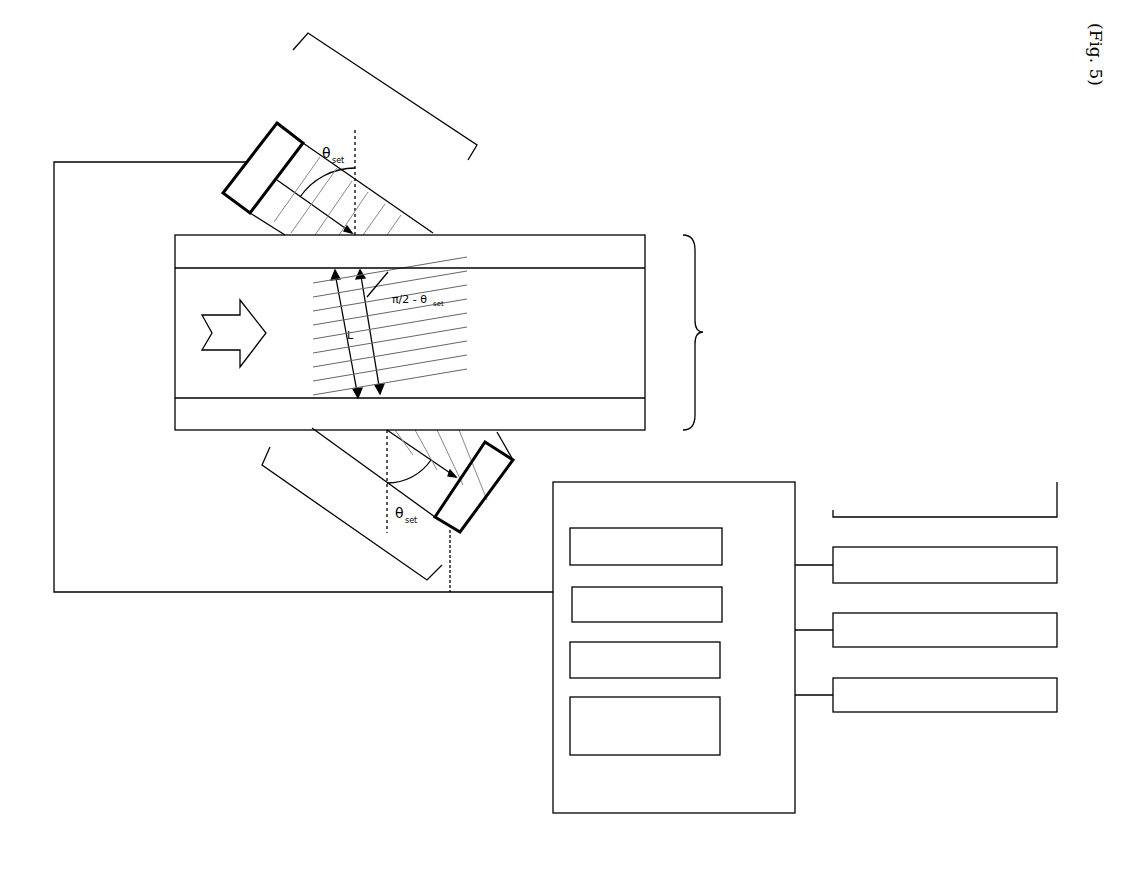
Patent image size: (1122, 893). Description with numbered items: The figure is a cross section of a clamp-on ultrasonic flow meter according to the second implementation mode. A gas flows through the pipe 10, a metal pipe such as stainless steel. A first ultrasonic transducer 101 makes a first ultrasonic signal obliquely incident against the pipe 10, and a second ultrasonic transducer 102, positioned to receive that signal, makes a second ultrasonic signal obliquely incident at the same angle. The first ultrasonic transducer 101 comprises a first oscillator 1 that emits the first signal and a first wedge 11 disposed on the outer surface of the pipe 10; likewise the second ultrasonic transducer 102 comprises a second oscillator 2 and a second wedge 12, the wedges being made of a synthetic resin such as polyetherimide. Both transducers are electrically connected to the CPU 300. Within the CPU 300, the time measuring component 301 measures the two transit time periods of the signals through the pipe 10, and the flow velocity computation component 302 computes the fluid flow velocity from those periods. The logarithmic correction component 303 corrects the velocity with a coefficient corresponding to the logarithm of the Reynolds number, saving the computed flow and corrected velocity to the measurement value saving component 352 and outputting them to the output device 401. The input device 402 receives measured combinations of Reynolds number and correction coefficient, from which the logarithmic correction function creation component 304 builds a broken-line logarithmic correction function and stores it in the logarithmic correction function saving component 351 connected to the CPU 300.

The first oscillator 1 is at (283, 118).
The second oscillator 2 is at (437, 527).
The pipe 10 is at (457, 332).
The first wedge 11 is at (417, 220).
The second wedge 12 is at (342, 458).
The first ultrasonic transducer 101 is at (393, 88).
The second ultrasonic transducer 102 is at (345, 522).
The central processing unit (CPU) 300 is at (747, 482).
The time measuring component 301 is at (725, 557).
The flow velocity computation component 302 is at (725, 612).
The logarithmic correction component 303 is at (725, 668).
The logarithmic correction function creation component 304 is at (725, 722).
The logarithmic correction function saving component 351 is at (932, 471).
The measurement value saving component 352 is at (1000, 541).
The output device 401 is at (995, 606).
The input device 402 is at (995, 671).